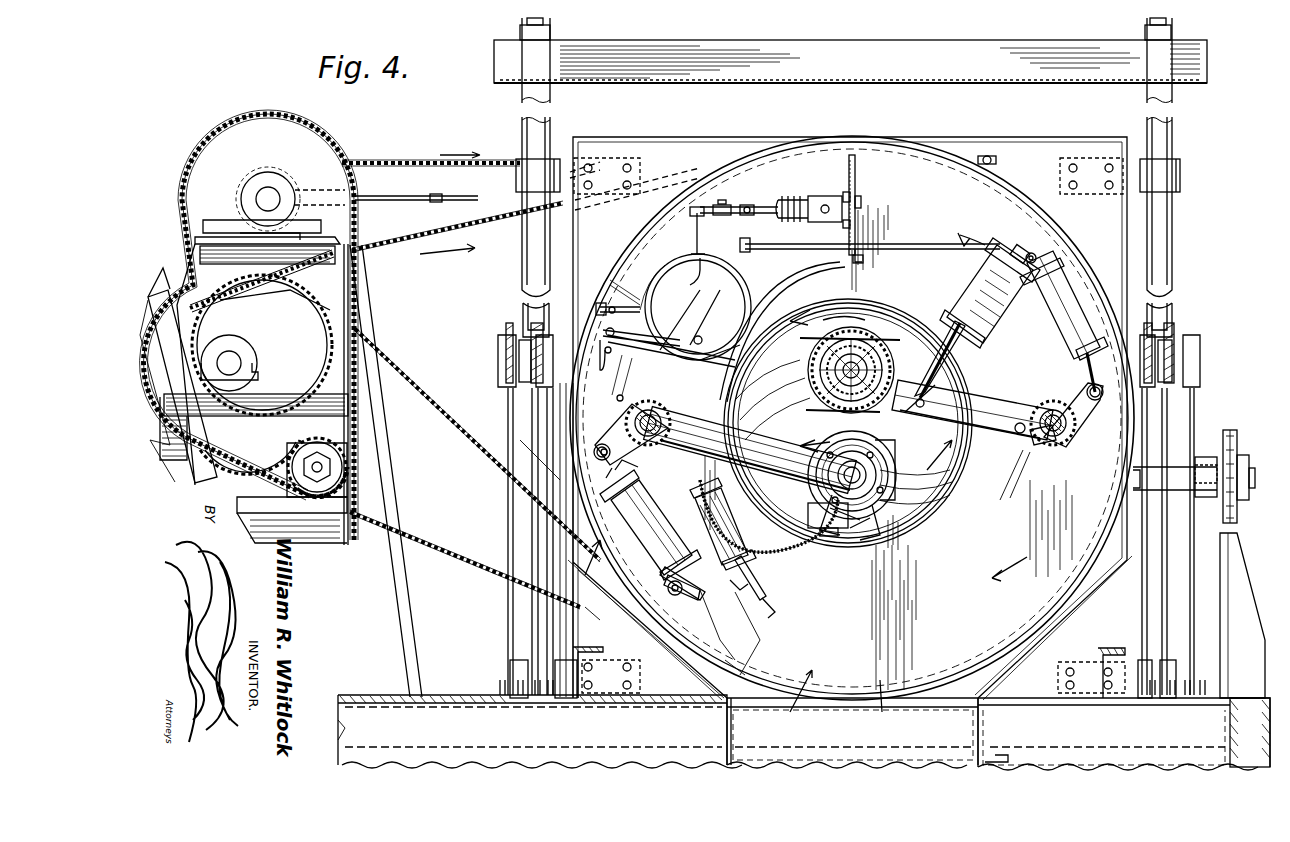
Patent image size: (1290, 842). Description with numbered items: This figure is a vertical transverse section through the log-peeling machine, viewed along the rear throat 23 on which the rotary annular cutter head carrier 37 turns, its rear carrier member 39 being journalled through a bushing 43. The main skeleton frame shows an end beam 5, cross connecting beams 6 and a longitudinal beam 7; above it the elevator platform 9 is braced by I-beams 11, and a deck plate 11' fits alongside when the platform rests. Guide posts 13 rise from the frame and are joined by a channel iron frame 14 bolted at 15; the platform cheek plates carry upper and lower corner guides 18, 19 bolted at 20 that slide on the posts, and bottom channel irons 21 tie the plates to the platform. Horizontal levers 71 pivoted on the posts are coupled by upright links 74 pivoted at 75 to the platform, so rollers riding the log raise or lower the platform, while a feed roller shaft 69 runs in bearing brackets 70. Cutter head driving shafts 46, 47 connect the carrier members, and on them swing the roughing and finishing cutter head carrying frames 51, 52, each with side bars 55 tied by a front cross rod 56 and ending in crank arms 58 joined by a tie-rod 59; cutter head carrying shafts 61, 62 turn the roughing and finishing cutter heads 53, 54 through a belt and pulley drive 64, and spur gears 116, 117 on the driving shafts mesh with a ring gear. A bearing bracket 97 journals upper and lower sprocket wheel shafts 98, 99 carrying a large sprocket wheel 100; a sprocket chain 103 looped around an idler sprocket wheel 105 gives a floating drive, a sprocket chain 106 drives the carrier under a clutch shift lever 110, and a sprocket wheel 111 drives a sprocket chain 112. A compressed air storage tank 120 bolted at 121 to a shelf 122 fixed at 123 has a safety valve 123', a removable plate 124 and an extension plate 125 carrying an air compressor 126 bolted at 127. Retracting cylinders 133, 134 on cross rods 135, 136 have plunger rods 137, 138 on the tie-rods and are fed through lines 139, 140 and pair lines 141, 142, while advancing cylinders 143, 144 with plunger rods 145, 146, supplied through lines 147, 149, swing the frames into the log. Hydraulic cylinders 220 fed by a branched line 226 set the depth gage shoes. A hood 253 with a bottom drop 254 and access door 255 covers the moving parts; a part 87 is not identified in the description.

The end beam 5 is at (1238, 742).
The cross connecting beam 6 is at (1002, 756).
The longitudinal beam 7 is at (355, 738).
The elevator platform 9 is at (672, 705).
The longitudinal I-beams 11 is at (524, 731).
The deck plate 11' is at (376, 471).
The rear side guide posts 13 is at (522, 261).
The rectangular channel iron frame 14 is at (1050, 40).
The bolts 15 is at (1172, 28).
The upper corner guides 18 is at (525, 170).
The lower corner guides 19 is at (510, 665).
The bolts 20 is at (624, 683).
The bottom channel irons 21 is at (599, 647).
The rear throat 23 is at (872, 305).
The rotary annular cutter head carrier 37 is at (792, 702).
The rear annular side carrier member 39 is at (879, 707).
The bushing 43 is at (890, 318).
The cutter head driving shaft 46 is at (648, 408).
The cutter head driving shaft 47 is at (1056, 445).
The roughing cutter head carrying frame 51 is at (700, 440).
The finishing cutter head carrying frame 52 is at (1000, 440).
The roughing cutter head 53 is at (826, 445).
The finishing cutter head 54 is at (884, 340).
The side bars 55 is at (1000, 385).
The front cross rod 56 is at (790, 440).
The rear end crank arms 58 is at (603, 445).
The rear cross tie-rod 59 is at (594, 455).
The cutter head carrying shaft 61 is at (840, 470).
The cutter head carrying shaft 62 is at (893, 362).
The belt and pulley drive 64 is at (750, 458).
The log-feeding roller shaft 69 is at (1200, 457).
The bearing brackets 70 is at (1208, 620).
The horizontal levers 71 is at (500, 368).
The upright links 74 is at (530, 408).
The pivots 75 is at (500, 683).
The sprocket 87 is at (1232, 430).
The bearing bracket 97 is at (330, 287).
The upper sprocket wheel shaft 98 is at (270, 197).
The lower sprocket wheel shaft 99 is at (229, 357).
The large sprocket wheel 100 is at (255, 118).
The sprocket chain 103 is at (365, 345).
The idler sprocket wheel 105 is at (347, 435).
The sprocket chain 106 is at (420, 160).
The clutch shift lever 110 is at (432, 194).
The sprocket wheel 111 is at (300, 340).
The sprocket chain 112 is at (396, 240).
The spur gear 116 is at (630, 455).
The spur gear 117 is at (1022, 470).
The compressed air storage tank 120 is at (695, 307).
The bolts 121 is at (618, 390).
The shelf 122 is at (593, 305).
The fastening 123 is at (662, 356).
The safety valve 123' is at (609, 278).
The removable plate 124 is at (793, 290).
The extension plate 125 is at (857, 172).
The air compressor 126 is at (820, 200).
The bolts 127 is at (861, 202).
The pneumatic retracting cylinders 133 is at (655, 530).
The pneumatic retracting cylinders 134 is at (1062, 285).
The cross rod 135 is at (673, 598).
The cross rod 136 is at (1038, 255).
The plunger rods 137 is at (575, 487).
The plunger rods 138 is at (1090, 372).
The pressure supply line 139 is at (580, 584).
The pressure supply line 140 is at (896, 243).
The cross connecting pair line 141 is at (660, 590).
The cross connecting pair line 142 is at (1017, 250).
The pneumatic advancing cylinder 143 is at (745, 560).
The pneumatic advancing cylinder 144 is at (975, 290).
The plunger rod 145 is at (723, 524).
The plunger rod 146 is at (950, 340).
The pressure supply line 147 is at (745, 612).
The pressure supply line 149 is at (965, 240).
The hydraulic cylinders 220 is at (836, 530).
The pressure fluid supply line 226 is at (795, 553).
The hood 253 is at (688, 182).
The bottom drop 254 is at (905, 748).
The access door 255 is at (835, 140).